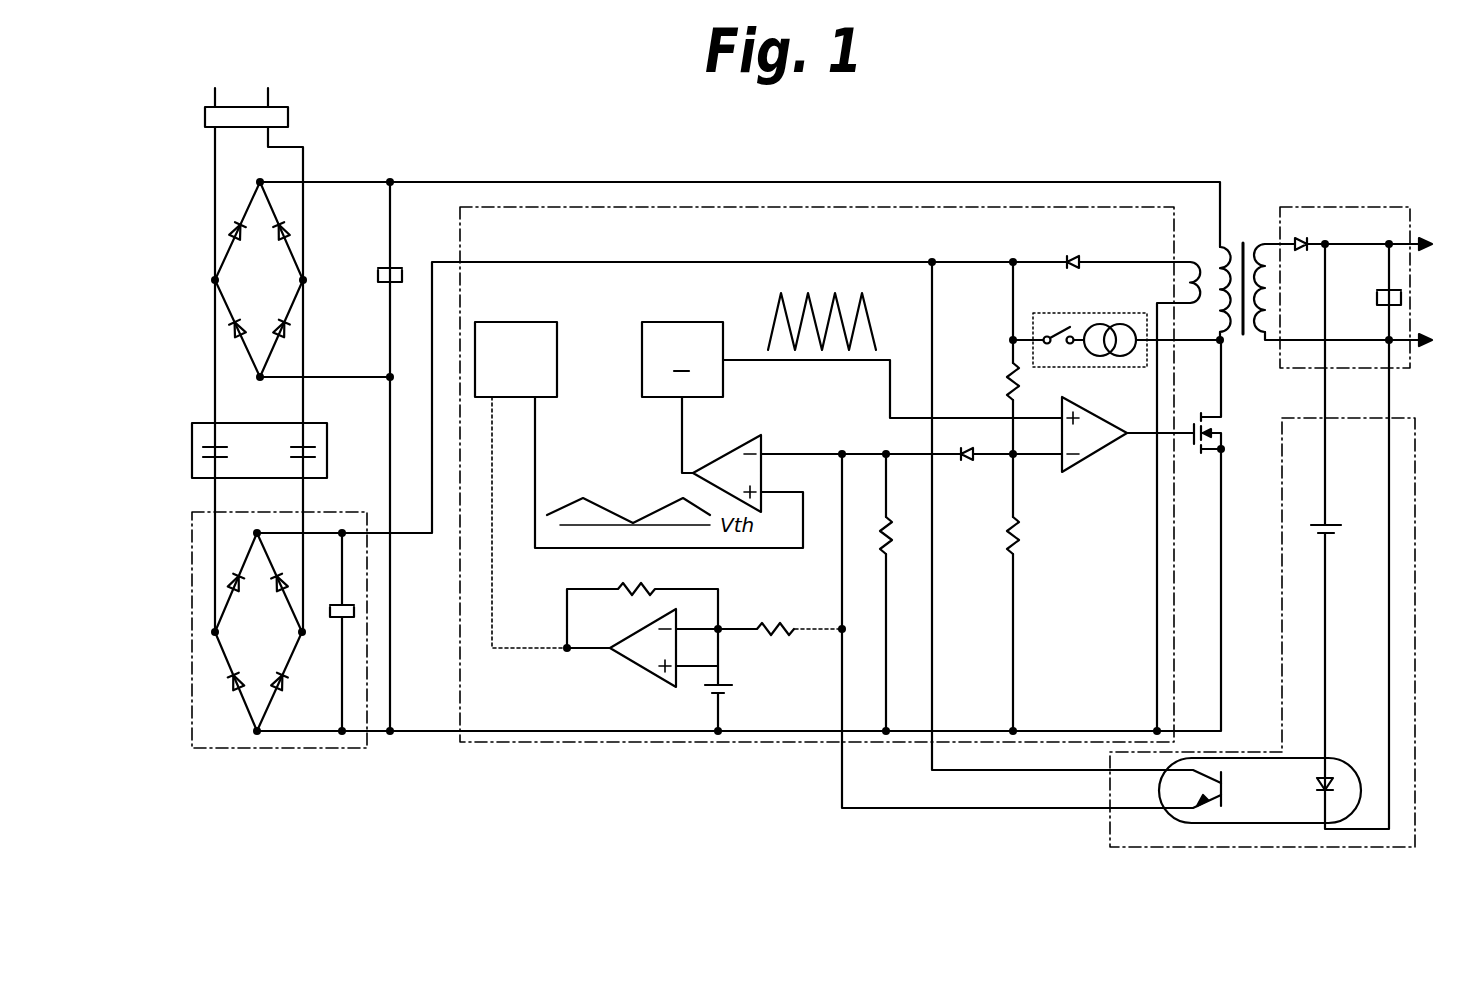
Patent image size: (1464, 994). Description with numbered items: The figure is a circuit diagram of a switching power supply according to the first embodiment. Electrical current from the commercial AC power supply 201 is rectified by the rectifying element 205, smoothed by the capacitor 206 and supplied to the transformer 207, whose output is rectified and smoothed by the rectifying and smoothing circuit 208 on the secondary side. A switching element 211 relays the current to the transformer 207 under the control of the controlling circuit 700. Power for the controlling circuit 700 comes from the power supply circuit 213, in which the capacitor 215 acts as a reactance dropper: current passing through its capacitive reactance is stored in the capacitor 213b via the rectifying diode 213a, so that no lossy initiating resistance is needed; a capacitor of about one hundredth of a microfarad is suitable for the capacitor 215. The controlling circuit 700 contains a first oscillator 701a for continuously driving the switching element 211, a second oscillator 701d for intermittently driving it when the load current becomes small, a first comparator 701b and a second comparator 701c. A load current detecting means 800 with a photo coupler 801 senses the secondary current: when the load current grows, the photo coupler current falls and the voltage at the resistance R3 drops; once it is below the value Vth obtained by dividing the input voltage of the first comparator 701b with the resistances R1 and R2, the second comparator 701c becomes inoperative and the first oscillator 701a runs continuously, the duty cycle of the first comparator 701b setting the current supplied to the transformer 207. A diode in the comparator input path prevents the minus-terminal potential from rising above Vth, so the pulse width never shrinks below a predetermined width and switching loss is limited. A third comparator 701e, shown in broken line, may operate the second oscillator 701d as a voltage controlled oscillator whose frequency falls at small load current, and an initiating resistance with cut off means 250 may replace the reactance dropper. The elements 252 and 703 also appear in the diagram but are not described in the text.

The commercial AC power supply 201 is at (289, 117).
The rectifying element 205 is at (272, 208).
The capacitor 206 is at (404, 271).
The capacitor (reactance dropper) 215 is at (328, 438).
The power supply circuit 213 is at (213, 748).
The rectifying diode 213a is at (268, 707).
The capacitor 213b is at (357, 607).
The controlling circuit 700 is at (580, 207).
The second oscillator 701d is at (511, 322).
The first oscillator 701a is at (651, 322).
The second comparator 701c is at (733, 442).
The first comparator 701b is at (1104, 453).
The third comparator 701e is at (637, 666).
The diode 703 is at (967, 462).
The diode 252 is at (1083, 258).
The initiating resistance and its cut off means 250 is at (1070, 313).
The resistance R1 is at (999, 381).
The resistance R2 is at (1031, 536).
The resistance R3 is at (903, 536).
The switching element 211 is at (1186, 452).
The transformer 207 is at (1247, 236).
The rectifying and smoothing circuit 208 is at (1358, 207).
The load current detecting means 800 is at (1415, 527).
The photo coupler 801 is at (1263, 823).